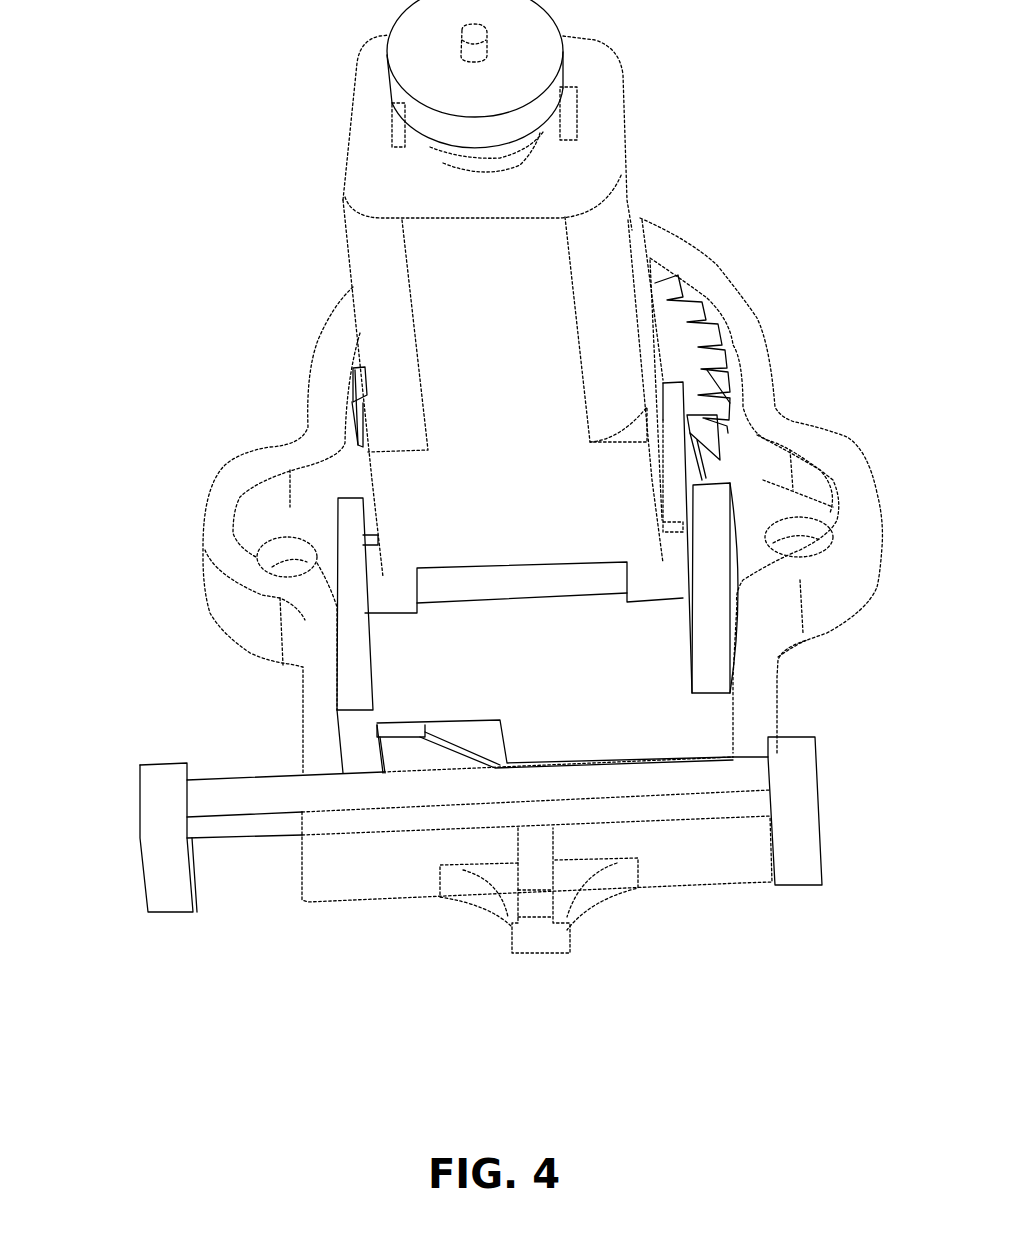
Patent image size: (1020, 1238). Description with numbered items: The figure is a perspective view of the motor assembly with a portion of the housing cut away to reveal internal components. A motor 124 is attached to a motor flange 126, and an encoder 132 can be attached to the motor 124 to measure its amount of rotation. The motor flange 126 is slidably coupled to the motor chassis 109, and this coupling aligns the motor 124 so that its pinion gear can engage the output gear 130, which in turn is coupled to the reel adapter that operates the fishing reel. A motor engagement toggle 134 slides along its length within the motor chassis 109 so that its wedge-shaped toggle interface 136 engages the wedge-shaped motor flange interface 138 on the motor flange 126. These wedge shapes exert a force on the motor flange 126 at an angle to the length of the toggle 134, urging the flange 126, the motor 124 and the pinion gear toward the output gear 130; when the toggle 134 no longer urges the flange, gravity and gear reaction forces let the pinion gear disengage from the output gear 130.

The motor chassis 109 is at (867, 568).
The motor 124 is at (437, 272).
The motor flange 126 is at (405, 660).
The output gear 130 is at (677, 347).
The encoder 132 is at (427, 57).
The motor engagement toggle 134 is at (250, 794).
The toggle interface 136 is at (448, 750).
The motor flange interface 138 is at (490, 732).